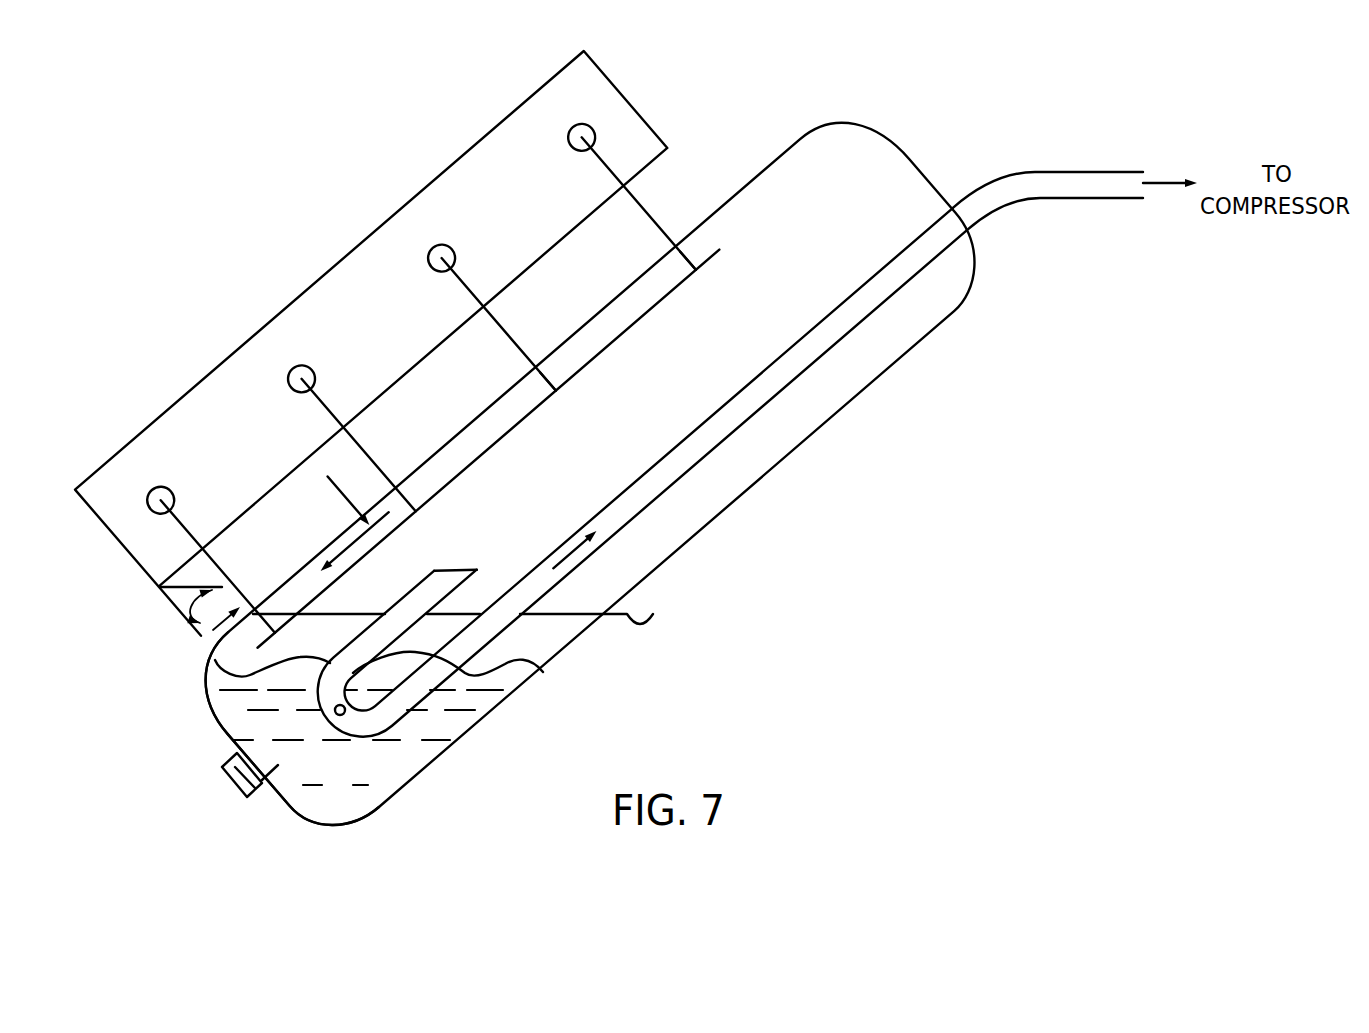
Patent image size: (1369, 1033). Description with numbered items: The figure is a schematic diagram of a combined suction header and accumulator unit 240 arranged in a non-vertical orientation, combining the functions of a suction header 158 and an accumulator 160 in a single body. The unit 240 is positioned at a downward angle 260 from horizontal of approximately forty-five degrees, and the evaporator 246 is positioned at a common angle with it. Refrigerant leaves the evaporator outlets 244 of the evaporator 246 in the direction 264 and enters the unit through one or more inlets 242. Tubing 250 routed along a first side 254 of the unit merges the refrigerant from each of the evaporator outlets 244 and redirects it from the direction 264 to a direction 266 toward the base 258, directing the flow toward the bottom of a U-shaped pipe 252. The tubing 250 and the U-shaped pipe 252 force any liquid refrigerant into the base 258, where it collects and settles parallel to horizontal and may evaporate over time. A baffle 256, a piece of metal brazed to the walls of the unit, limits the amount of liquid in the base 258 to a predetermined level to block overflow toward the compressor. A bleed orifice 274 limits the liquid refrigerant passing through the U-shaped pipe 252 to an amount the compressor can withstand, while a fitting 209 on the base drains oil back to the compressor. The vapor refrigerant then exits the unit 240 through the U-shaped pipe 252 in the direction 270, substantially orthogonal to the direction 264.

The suction header 158 is at (507, 455).
The accumulator 160 is at (765, 435).
The fitting 209 is at (220, 760).
The combined suction header and accumulator unit 240 is at (718, 517).
The inlets 242 is at (700, 254).
The evaporator outlets 244 is at (657, 225).
The evaporator 246 is at (330, 265).
The tubing 250 is at (657, 307).
The U-shaped pipe 252 is at (836, 334).
The first side 254 is at (472, 407).
The baffle 256 is at (555, 616).
The base 258 is at (287, 800).
The downward angle 260 is at (186, 606).
The direction 264 is at (345, 498).
The direction 266 is at (347, 537).
The direction 270 is at (565, 562).
The bleed orifice 274 is at (335, 709).